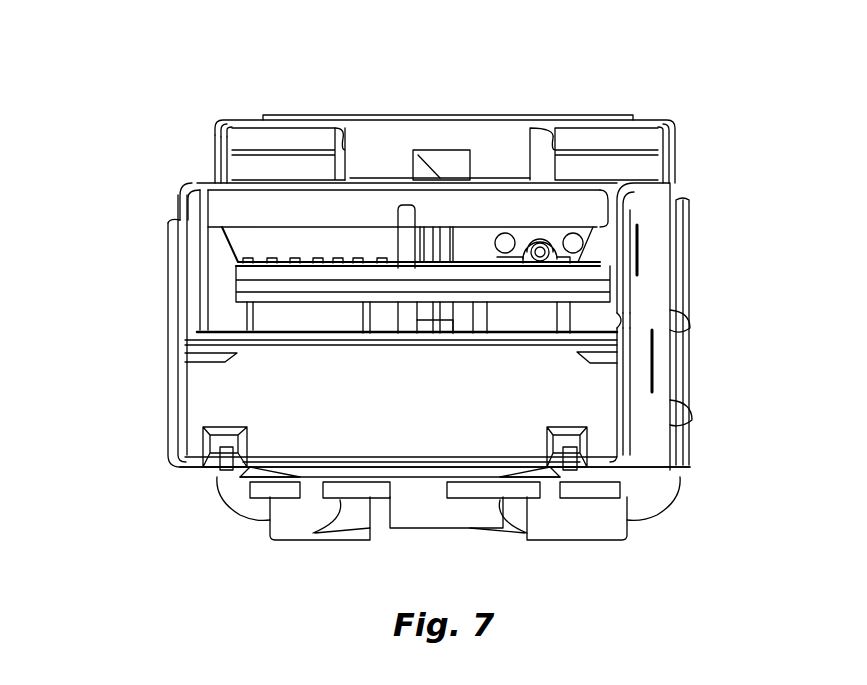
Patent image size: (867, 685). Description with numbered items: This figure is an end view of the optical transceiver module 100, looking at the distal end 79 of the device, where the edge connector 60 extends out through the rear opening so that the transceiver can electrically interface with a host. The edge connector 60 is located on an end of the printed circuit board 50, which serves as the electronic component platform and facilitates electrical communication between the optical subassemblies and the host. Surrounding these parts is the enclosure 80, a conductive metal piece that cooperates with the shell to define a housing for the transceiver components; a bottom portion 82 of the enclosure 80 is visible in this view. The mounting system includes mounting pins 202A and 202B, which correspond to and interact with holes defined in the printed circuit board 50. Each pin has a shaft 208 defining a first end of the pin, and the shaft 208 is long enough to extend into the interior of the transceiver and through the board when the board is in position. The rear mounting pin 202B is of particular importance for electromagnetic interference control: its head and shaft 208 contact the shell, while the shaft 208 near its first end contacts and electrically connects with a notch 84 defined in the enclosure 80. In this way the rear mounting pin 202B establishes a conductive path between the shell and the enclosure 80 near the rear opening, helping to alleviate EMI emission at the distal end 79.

The optical transceiver module 100 is at (158, 143).
The enclosure 80 is at (648, 298).
The bottom portion 82 is at (299, 183).
The printed circuit board 50 is at (265, 257).
The edge connector 60 is at (537, 283).
The notch 84 is at (409, 250).
The shaft 208 is at (432, 228).
The mounting pin 202A is at (440, 251).
The rear mounting pin 202B is at (383, 213).
The distal end 79 is at (243, 382).